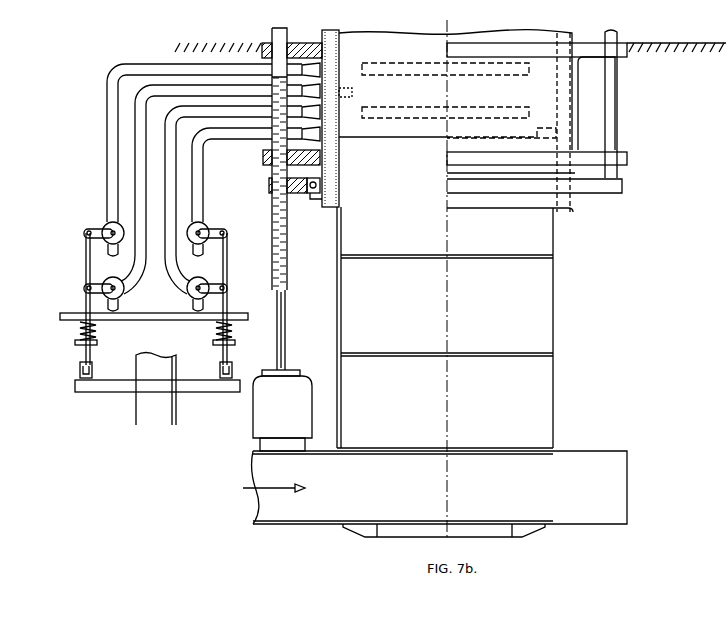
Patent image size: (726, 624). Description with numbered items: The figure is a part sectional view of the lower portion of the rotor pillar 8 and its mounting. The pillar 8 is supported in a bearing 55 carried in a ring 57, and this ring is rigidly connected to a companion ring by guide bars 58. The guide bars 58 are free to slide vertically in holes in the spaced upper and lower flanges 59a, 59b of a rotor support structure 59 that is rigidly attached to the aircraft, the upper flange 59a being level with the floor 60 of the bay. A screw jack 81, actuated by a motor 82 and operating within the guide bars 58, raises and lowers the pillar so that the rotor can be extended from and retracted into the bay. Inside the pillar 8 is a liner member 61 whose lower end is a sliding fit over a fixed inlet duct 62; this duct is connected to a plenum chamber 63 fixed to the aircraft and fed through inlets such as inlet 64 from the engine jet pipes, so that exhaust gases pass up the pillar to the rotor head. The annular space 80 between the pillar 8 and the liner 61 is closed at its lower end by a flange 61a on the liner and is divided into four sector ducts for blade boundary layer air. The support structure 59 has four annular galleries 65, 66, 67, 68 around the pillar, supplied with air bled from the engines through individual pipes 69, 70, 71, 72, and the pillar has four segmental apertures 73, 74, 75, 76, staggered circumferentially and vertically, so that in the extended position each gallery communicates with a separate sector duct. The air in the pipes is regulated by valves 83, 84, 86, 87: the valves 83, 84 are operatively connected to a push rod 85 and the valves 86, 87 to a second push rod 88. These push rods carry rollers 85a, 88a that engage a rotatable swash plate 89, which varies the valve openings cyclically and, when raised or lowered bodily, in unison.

The rotor pillar 8 is at (530, 33).
The bearing 55 is at (310, 194).
The ring 57 is at (272, 193).
The guide bar 58 is at (272, 32).
The rotor support structure 59 is at (575, 116).
The upper flange 59a is at (627, 57).
The lower flange 59b is at (627, 165).
The floor 60 is at (690, 38).
The liner member 61 is at (339, 70).
The flange 61a is at (335, 157).
The inlet duct 62 is at (337, 313).
The plenum chamber 63 is at (595, 451).
The inlet 64 is at (262, 468).
The annular gallery 65 is at (321, 67).
The annular gallery 66 is at (322, 98).
The annular gallery 67 is at (322, 118).
The annular gallery 68 is at (324, 133).
The air supply pipe 69 is at (160, 67).
The air supply pipe 70 is at (150, 98).
The air supply pipe 71 is at (175, 120).
The air supply pipe 72 is at (205, 142).
The segmental aperture 73 is at (468, 77).
The segmental aperture 74 is at (352, 92).
The segmental aperture 75 is at (447, 108).
The segmental aperture 76 is at (537, 135).
The annular space 80 is at (332, 43).
The screw jack 81 is at (286, 340).
The motor 82 is at (289, 413).
The valve 83 is at (105, 225).
The valve 84 is at (107, 279).
The push rod 85 is at (85, 305).
The roller 85a is at (92, 372).
The valve 86 is at (201, 279).
The valve 87 is at (204, 224).
The push rod 88 is at (228, 301).
The roller 88a is at (232, 367).
The swash plate 89 is at (190, 389).